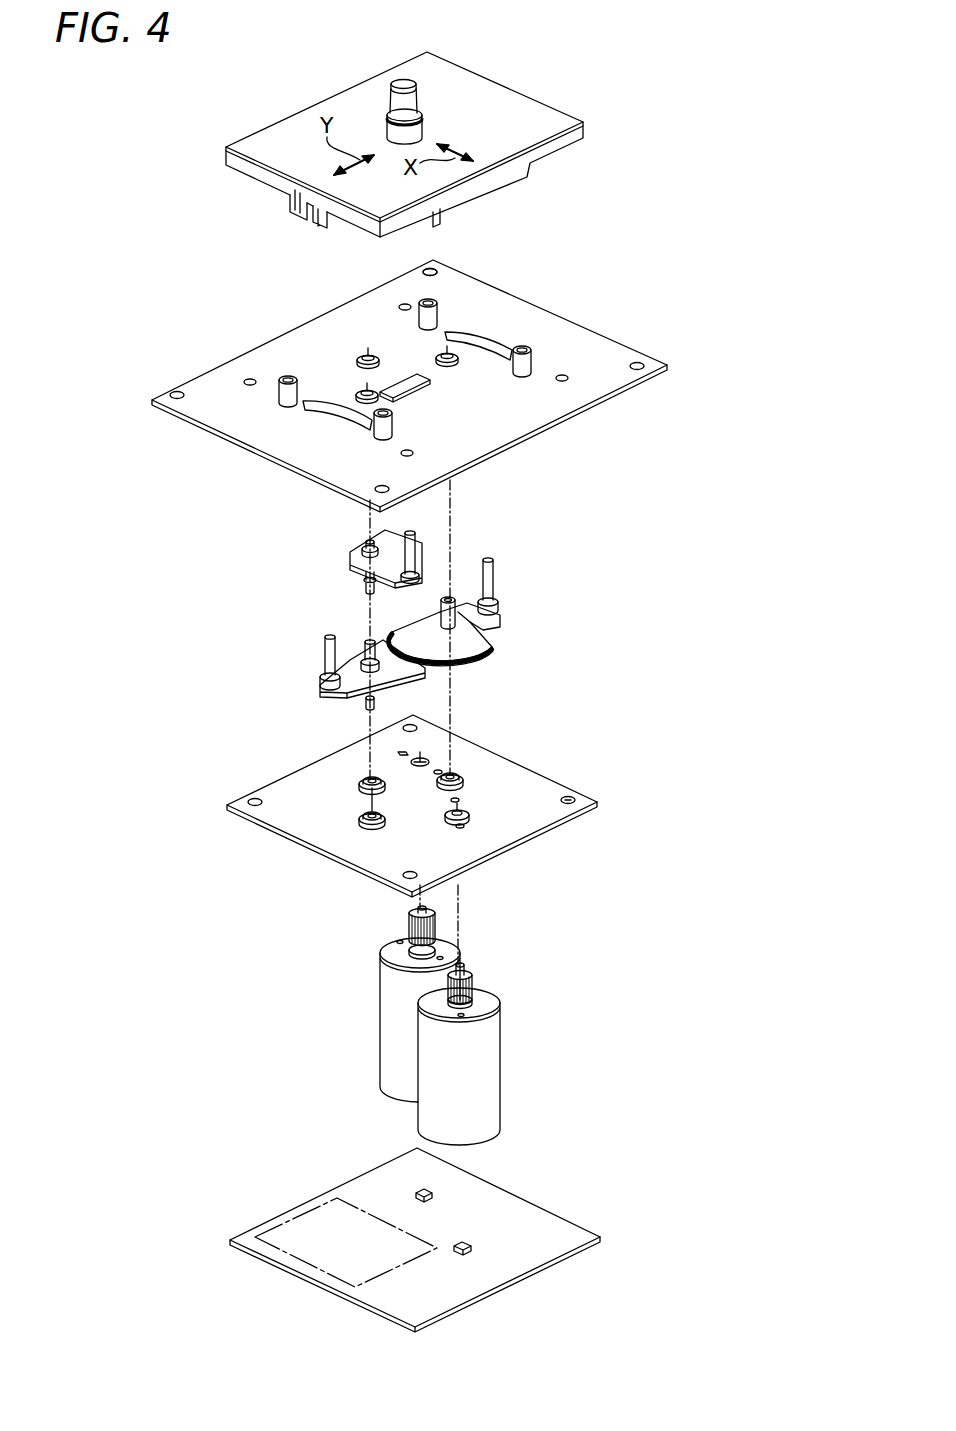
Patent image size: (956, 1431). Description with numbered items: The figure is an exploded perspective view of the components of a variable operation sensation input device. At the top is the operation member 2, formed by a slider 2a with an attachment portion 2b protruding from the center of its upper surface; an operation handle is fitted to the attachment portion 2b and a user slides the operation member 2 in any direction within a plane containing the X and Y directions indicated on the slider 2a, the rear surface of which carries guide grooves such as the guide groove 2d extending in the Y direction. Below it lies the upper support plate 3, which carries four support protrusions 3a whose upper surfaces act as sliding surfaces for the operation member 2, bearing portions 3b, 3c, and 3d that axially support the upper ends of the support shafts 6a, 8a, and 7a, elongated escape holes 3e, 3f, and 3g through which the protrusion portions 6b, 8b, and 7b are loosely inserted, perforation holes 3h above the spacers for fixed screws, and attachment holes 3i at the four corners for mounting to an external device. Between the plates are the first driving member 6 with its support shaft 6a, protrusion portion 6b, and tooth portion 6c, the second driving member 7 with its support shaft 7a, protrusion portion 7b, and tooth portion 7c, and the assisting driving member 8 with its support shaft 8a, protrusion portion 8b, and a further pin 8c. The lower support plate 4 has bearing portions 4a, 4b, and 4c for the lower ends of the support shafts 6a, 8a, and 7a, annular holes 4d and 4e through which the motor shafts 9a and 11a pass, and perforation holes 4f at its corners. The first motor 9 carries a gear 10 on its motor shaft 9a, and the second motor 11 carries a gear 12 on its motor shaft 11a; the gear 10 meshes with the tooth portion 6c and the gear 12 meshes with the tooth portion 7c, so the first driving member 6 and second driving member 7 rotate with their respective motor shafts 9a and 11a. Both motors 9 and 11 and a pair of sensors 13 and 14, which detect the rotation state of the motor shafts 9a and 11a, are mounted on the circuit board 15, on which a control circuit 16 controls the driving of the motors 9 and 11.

The operation member 2 is at (513, 180).
The slider 2a is at (418, 130).
The attachment portion 2b is at (397, 102).
The guide groove 2d is at (300, 203).
The upper support plate 3 is at (597, 393).
The support protrusions 3a is at (280, 380).
The bearing portion 3b is at (447, 357).
The bearing portion 3c is at (367, 395).
The bearing portion 3d is at (368, 358).
The escape hole 3e is at (490, 340).
The escape hole 3f is at (313, 413).
The escape hole 3g is at (417, 385).
The perforation holes 3h is at (560, 378).
The attachment holes 3i is at (430, 272).
The lower support plate 4 is at (550, 820).
The bearing portion 4a is at (472, 775).
The bearing portion 4b is at (357, 817).
The bearing portion 4c is at (357, 782).
The annular hole 4d is at (470, 812).
The annular hole 4e is at (420, 762).
The perforation holes 4f is at (577, 792).
The first driving member 6 is at (498, 632).
The support shaft 6a is at (450, 617).
The protrusion portion 6b is at (488, 580).
The tooth portion 6c is at (493, 652).
The second driving member 7 is at (350, 558).
The support shaft 7a is at (368, 545).
The protrusion portion 7b is at (413, 557).
The tooth portion 7c is at (387, 533).
The assisting driving member 8 is at (323, 687).
The support shaft 8a is at (365, 640).
The protrusion portion 8b is at (328, 653).
The pin 8c is at (387, 635).
The first motor 9 is at (425, 1108).
The motor shaft 9a is at (463, 970).
The gear 10 is at (473, 983).
The second motor 11 is at (387, 1043).
The motor shaft 11a is at (420, 912).
The gear 12 is at (410, 922).
The sensor 13 is at (467, 1247).
The sensor 14 is at (425, 1195).
The circuit board 15 is at (498, 1277).
The control circuit 16 is at (292, 1220).